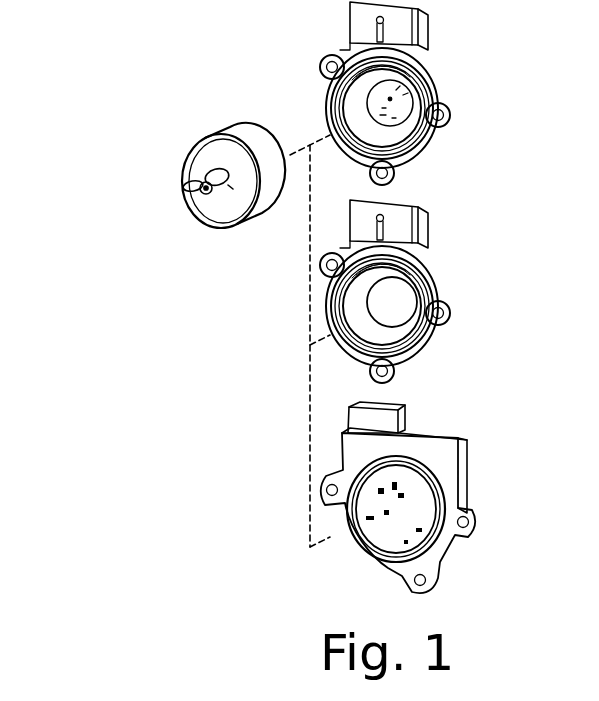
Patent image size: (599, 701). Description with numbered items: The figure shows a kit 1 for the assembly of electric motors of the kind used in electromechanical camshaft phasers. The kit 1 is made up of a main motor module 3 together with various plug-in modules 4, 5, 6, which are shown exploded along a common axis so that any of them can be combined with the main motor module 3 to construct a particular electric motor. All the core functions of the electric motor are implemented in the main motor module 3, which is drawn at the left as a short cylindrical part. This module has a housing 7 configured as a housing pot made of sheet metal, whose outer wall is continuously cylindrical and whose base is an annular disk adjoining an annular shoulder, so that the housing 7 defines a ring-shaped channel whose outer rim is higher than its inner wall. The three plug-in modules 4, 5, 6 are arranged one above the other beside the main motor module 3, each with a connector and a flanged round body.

The kit 1 is at (130, 76).
The main motor module 3 is at (230, 128).
The plug-in module 4 is at (432, 76).
The plug-in module 5 is at (432, 274).
The plug-in module 6 is at (470, 452).
The housing 7 is at (266, 205).